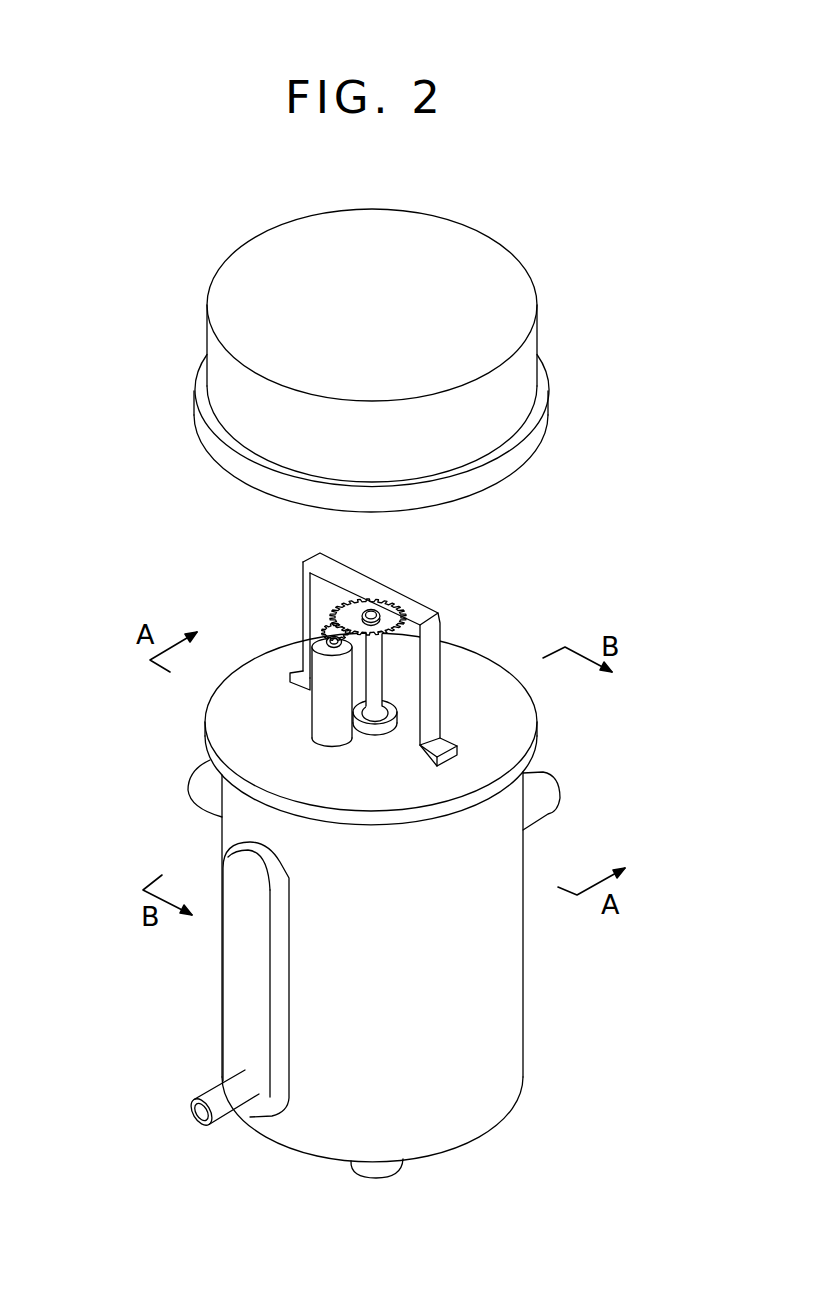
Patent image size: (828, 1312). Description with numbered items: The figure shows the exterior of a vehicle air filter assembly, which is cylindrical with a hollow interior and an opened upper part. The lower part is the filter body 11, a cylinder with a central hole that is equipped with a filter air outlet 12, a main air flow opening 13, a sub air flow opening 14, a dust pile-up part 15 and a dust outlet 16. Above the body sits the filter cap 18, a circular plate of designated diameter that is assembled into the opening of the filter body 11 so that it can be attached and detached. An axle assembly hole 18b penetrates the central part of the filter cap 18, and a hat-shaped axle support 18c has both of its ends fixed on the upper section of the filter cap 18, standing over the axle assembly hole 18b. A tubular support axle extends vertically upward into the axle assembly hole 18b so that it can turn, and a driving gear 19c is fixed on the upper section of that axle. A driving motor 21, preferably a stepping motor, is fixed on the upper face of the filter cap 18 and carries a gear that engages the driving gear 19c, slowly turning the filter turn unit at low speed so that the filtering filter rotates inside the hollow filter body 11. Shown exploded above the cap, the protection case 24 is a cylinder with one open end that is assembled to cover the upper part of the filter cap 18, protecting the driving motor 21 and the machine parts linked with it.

The filter body 11 is at (515, 993).
The filter air outlet 12 is at (367, 1172).
The main air flow opening 13 is at (202, 788).
The sub air flow opening 14 is at (550, 790).
The dust pile-up part 15 is at (235, 1022).
The dust outlet 16 is at (197, 1104).
The filter cap 18 is at (268, 662).
The axle assembly hole 18b is at (403, 713).
The axle support 18c is at (310, 552).
The driving gear 19c is at (353, 612).
The driving motor 21 is at (322, 713).
The protection case 24 is at (513, 405).